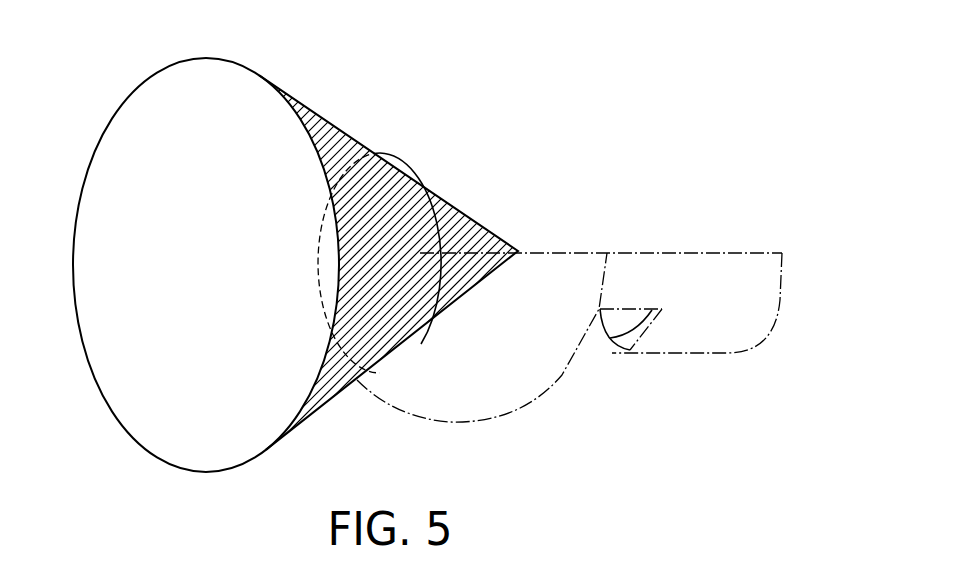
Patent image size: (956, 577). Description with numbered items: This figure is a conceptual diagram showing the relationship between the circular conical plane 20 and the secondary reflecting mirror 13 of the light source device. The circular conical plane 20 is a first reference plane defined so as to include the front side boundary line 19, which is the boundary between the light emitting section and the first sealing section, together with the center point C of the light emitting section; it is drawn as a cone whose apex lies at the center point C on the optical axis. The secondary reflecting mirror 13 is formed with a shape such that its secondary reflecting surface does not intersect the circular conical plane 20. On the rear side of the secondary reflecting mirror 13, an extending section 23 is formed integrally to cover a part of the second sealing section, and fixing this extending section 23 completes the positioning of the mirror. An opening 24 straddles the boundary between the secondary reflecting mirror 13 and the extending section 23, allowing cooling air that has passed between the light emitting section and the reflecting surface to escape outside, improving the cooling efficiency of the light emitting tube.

The circular conical plane 20 is at (377, 203).
The front side boundary line 19 is at (440, 203).
The center point C is at (519, 253).
The secondary reflecting mirror 13 is at (514, 385).
The opening 24 is at (607, 352).
The extending section 23 is at (697, 345).